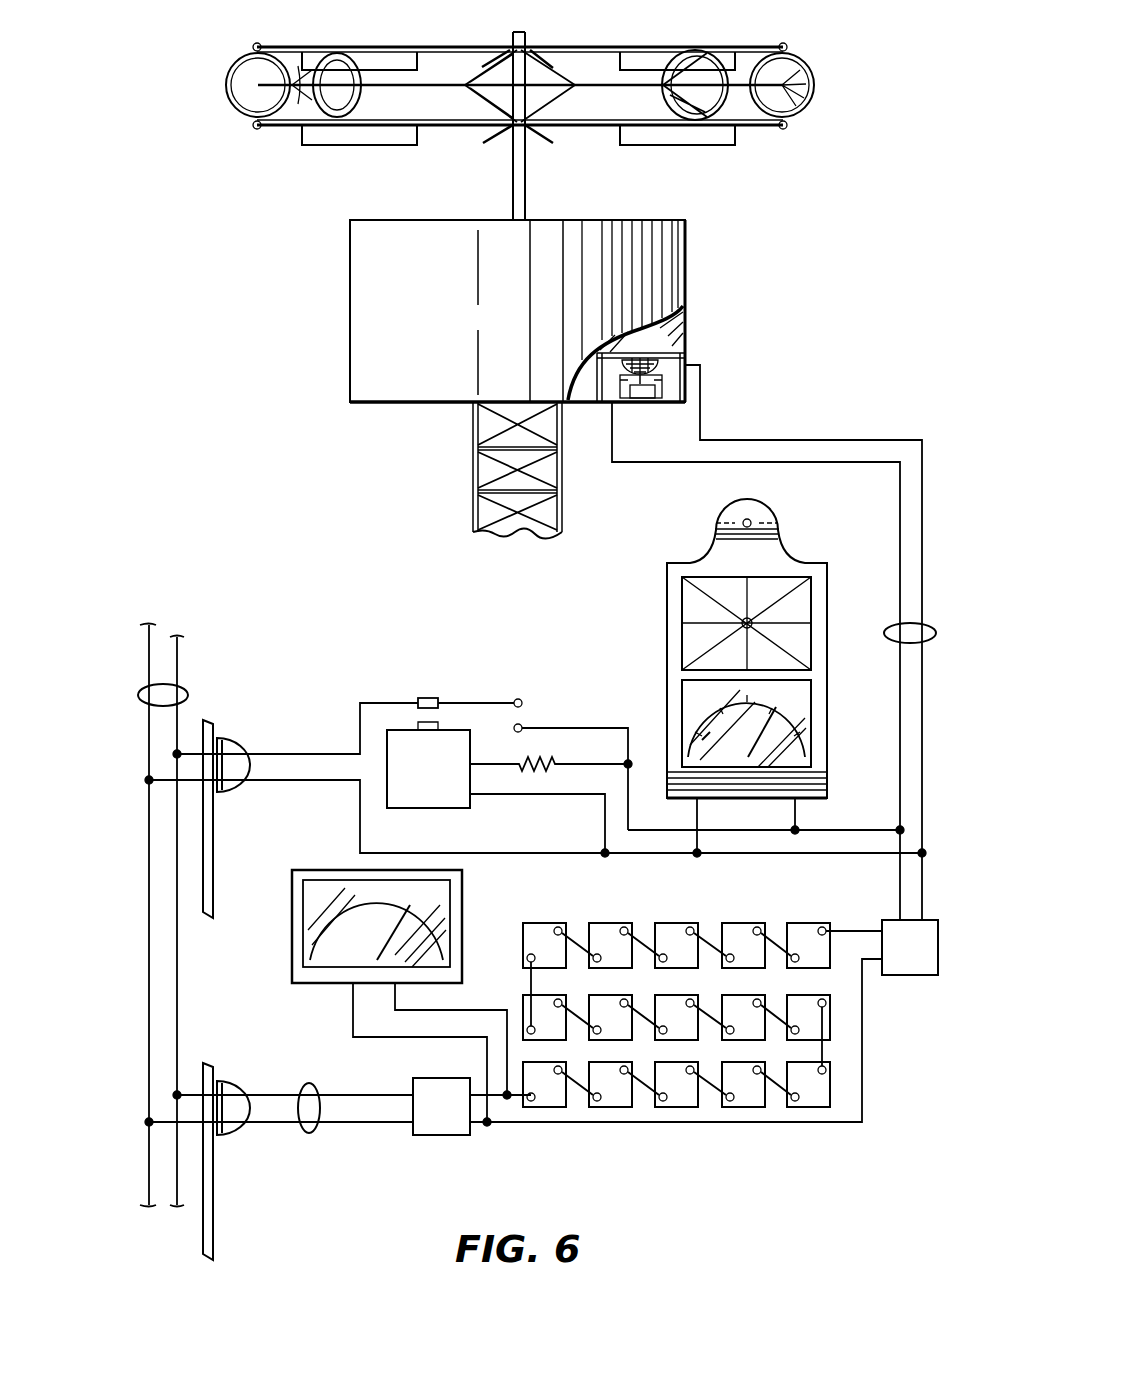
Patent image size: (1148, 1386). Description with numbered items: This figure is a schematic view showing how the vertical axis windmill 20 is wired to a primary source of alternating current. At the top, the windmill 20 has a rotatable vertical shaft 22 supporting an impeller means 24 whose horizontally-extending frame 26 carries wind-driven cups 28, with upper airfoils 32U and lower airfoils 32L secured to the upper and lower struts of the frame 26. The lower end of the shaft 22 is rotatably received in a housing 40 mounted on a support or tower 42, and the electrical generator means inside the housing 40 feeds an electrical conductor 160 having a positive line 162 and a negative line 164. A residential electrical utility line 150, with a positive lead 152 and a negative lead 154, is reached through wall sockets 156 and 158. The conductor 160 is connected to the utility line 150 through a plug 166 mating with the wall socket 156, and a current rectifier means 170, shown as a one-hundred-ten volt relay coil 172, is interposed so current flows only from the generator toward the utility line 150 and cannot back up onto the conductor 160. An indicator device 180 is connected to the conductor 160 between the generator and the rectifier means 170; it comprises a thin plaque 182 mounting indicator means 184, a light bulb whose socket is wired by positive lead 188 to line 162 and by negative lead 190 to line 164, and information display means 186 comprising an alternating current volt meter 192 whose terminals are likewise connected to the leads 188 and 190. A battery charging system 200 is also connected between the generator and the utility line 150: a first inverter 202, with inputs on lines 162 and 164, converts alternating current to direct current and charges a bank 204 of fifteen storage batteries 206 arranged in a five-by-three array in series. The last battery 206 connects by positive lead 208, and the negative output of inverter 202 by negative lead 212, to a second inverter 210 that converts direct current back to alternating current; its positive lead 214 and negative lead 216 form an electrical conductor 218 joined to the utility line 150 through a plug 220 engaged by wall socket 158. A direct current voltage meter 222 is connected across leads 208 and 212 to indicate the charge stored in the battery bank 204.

The vertical axis windmill 20 is at (280, 222).
The rotatable vertical shaft 22 is at (525, 186).
The impeller means 24 is at (430, 34).
The frame 26 is at (597, 47).
The cups 28 is at (690, 60).
The upper airfoils 32U is at (372, 58).
The lower airfoils 32L is at (372, 140).
The housing 40 is at (370, 250).
The support or tower 42 is at (476, 440).
The electrical utility line 150 is at (140, 695).
The positive lead 152 is at (178, 667).
The negative lead 154 is at (148, 667).
The wall socket 156 is at (213, 858).
The wall socket 158 is at (213, 1206).
The electrical conductor 160 is at (933, 633).
The positive line 162 is at (900, 540).
The negative line 164 is at (922, 548).
The plug 166 is at (242, 742).
The current rectifier means 170 is at (396, 690).
The relay coil 172 is at (428, 808).
The indicator device 180 is at (650, 628).
The plaque 182 is at (778, 522).
The indicator means 184 is at (747, 618).
The information display means 186 is at (812, 705).
The positive lead 188 is at (798, 820).
The negative lead 190 is at (697, 820).
The alternating current volt meter 192 is at (705, 738).
The battery charging system 200 is at (670, 912).
The first inverter 202 is at (936, 928).
The bank of storage batteries 204 is at (740, 928).
The storage battery 206 is at (812, 925).
The positive lead 208 is at (507, 1102).
The second inverter 210 is at (436, 1135).
The negative lead 212 is at (620, 1122).
The positive lead 214 is at (376, 1095).
The negative lead 216 is at (356, 1122).
The electrical conductor 218 is at (312, 1090).
The plug 220 is at (246, 1086).
The direct current voltage meter 222 is at (462, 910).